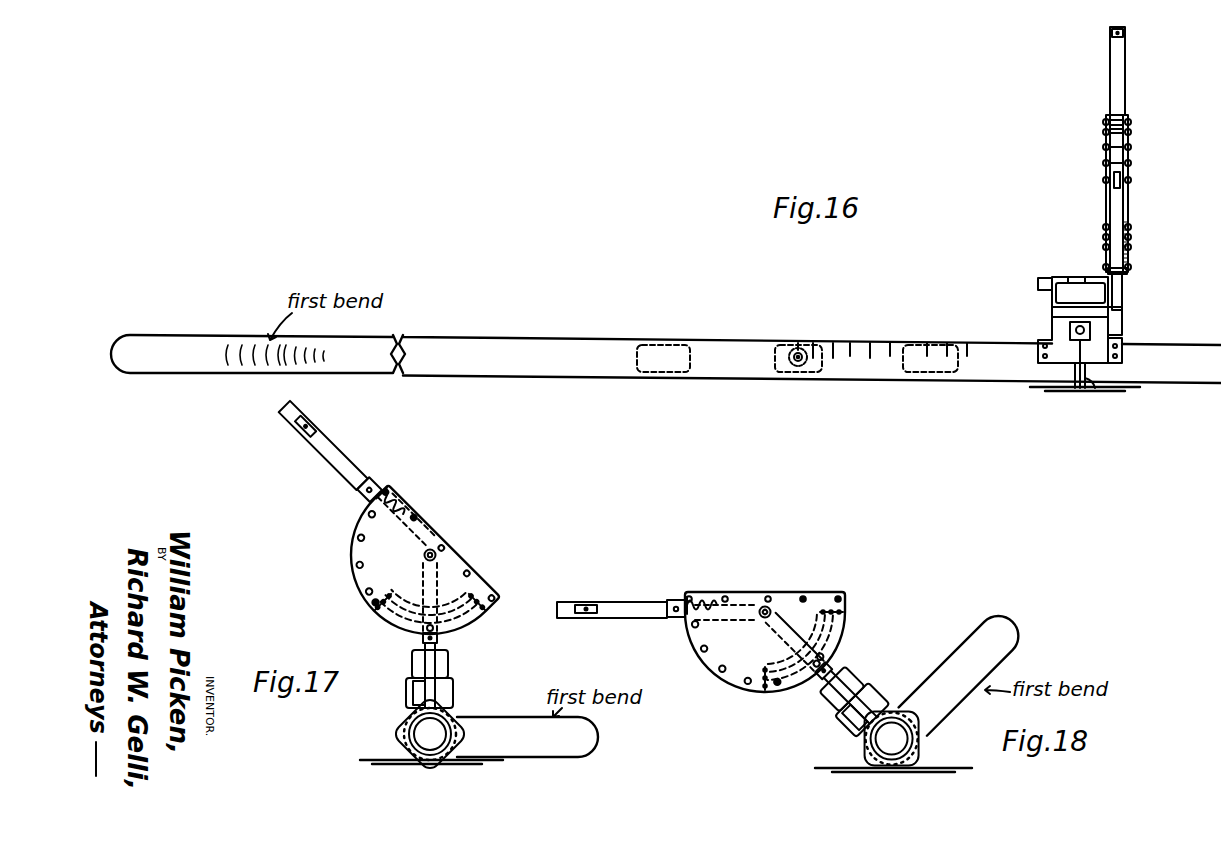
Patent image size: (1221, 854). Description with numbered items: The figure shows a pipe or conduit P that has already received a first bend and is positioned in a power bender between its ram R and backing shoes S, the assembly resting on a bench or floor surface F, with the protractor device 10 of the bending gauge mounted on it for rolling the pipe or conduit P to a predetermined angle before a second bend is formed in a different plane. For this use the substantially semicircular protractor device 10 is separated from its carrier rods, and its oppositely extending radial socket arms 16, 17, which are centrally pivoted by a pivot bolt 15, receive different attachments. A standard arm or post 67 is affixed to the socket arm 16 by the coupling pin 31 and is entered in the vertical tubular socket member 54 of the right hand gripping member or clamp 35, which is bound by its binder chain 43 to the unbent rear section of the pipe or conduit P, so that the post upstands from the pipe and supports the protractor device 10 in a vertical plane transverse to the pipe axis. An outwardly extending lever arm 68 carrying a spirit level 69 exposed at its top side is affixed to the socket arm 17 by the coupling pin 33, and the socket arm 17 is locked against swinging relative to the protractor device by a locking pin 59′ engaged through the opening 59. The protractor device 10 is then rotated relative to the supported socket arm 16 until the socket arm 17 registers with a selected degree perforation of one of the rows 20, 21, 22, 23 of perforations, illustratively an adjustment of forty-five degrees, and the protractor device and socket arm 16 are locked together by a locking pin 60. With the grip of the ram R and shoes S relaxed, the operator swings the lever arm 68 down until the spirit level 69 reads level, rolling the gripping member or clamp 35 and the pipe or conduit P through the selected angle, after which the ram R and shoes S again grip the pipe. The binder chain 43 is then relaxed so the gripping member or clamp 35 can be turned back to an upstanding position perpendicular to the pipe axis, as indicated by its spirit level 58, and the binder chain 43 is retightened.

In FIG. 16, the protractor device 10 is at (1098, 197).
In FIG. 17, the protractor device 10 is at (468, 551).
In FIG. 18, the protractor device 10 is at (786, 590).
In FIG. 16, the pivot bolt 15 is at (1130, 183).
In FIG. 17, the pivot bolt 15 is at (433, 548).
In FIG. 18, the pivot bolt 15 is at (762, 621).
In FIG. 16, the socket arm 16 is at (1118, 220).
In FIG. 17, the socket arm 16 is at (438, 637).
In FIG. 18, the socket arm 16 is at (822, 676).
In FIG. 16, the socket arm 17 is at (1128, 125).
In FIG. 17, the socket arm 17 is at (383, 492).
In FIG. 18, the socket arm 17 is at (688, 603).
In FIG. 17, the row of degree perforations 20 is at (375, 606).
In FIG. 17, the row of degree perforations 21 is at (372, 597).
In FIG. 17, the row of degree perforations 22 is at (379, 602).
In FIG. 17, the row of degree perforations 23 is at (392, 603).
In FIG. 16, the coupling pin 31 is at (1130, 271).
In FIG. 17, the coupling pin 31 is at (412, 651).
In FIG. 18, the coupling pin 31 is at (842, 663).
In FIG. 17, the coupling pin 33 is at (358, 500).
In FIG. 18, the coupling pin 33 is at (678, 620).
In FIG. 16, the gripping member or clamp 35 is at (1042, 321).
In FIG. 17, the gripping member or clamp 35 is at (459, 697).
In FIG. 18, the gripping member or clamp 35 is at (888, 702).
In FIG. 16, the binder chain 43 is at (1082, 390).
In FIG. 17, the binder chain 43 is at (397, 746).
In FIG. 18, the binder chain 43 is at (918, 748).
In FIG. 16, the tubular socket member 54 is at (1124, 320).
In FIG. 17, the tubular socket member 54 is at (418, 691).
In FIG. 18, the tubular socket member 54 is at (856, 728).
In FIG. 16, the spirit level 58 is at (1045, 278).
In FIG. 17, the opening 59 is at (402, 519).
In FIG. 18, the locking pin 59′ is at (705, 603).
In FIG. 17, the locking pin 60 is at (427, 631).
In FIG. 18, the locking pin 60 is at (812, 668).
In FIG. 16, the standard arm or post 67 is at (1124, 290).
In FIG. 17, the standard arm or post 67 is at (437, 666).
In FIG. 18, the standard arm or post 67 is at (858, 681).
In FIG. 16, the lever arm 68 is at (1111, 80).
In FIG. 17, the lever arm 68 is at (341, 455).
In FIG. 18, the lever arm 68 is at (622, 601).
In FIG. 16, the spirit level 69 is at (1117, 33).
In FIG. 17, the spirit level 69 is at (306, 427).
In FIG. 18, the spirit level 69 is at (588, 604).
In FIG. 16, the pipe or conduit P is at (575, 347).
In FIG. 17, the pipe or conduit P is at (448, 756).
In FIG. 18, the pipe or conduit P is at (926, 739).
In FIG. 16, the floor surface F is at (1132, 390).
In FIG. 17, the floor surface F is at (386, 763).
In FIG. 18, the floor surface F is at (828, 766).
In FIG. 16, the backing shoes S is at (637, 372).
In FIG. 16, the ram R is at (775, 372).